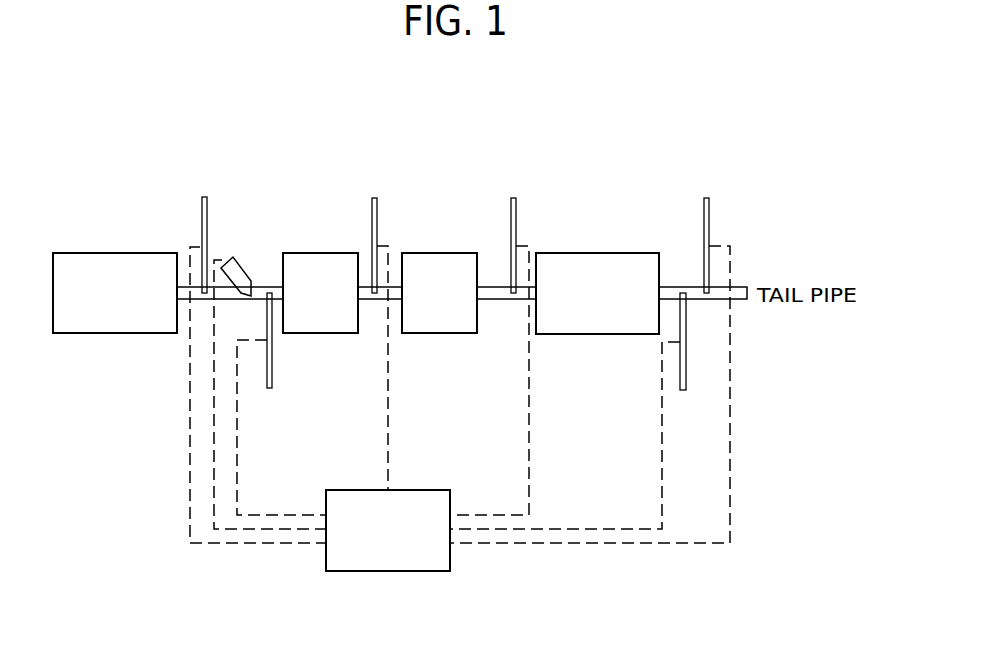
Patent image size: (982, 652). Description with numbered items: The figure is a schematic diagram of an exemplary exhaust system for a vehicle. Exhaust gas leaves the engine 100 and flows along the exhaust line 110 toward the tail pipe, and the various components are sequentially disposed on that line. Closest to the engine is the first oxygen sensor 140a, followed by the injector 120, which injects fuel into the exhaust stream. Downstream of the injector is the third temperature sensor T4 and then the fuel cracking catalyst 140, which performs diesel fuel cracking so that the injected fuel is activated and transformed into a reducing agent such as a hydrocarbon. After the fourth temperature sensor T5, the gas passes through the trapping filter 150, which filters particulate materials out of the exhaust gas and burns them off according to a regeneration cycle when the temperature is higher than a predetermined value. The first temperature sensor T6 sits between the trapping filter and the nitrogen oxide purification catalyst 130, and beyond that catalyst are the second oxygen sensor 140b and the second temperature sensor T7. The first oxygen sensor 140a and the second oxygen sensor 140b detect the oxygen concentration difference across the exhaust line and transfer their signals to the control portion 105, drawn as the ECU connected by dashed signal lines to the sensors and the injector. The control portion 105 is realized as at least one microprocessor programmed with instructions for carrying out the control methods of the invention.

The engine 100 is at (117, 334).
The control portion 105 is at (388, 572).
The exhaust line 110 is at (497, 300).
The injector 120 is at (241, 262).
The nitrogen oxide purification catalyst 130 is at (602, 335).
The fuel cracking catalyst 140 is at (328, 334).
The first oxygen sensor 140a is at (201, 203).
The second oxygen sensor 140b is at (687, 381).
The trapping filter 150 is at (446, 334).
The third temperature sensor T4 is at (268, 357).
The fourth temperature sensor T5 is at (374, 230).
The first temperature sensor T6 is at (514, 230).
The second temperature sensor T7 is at (704, 230).